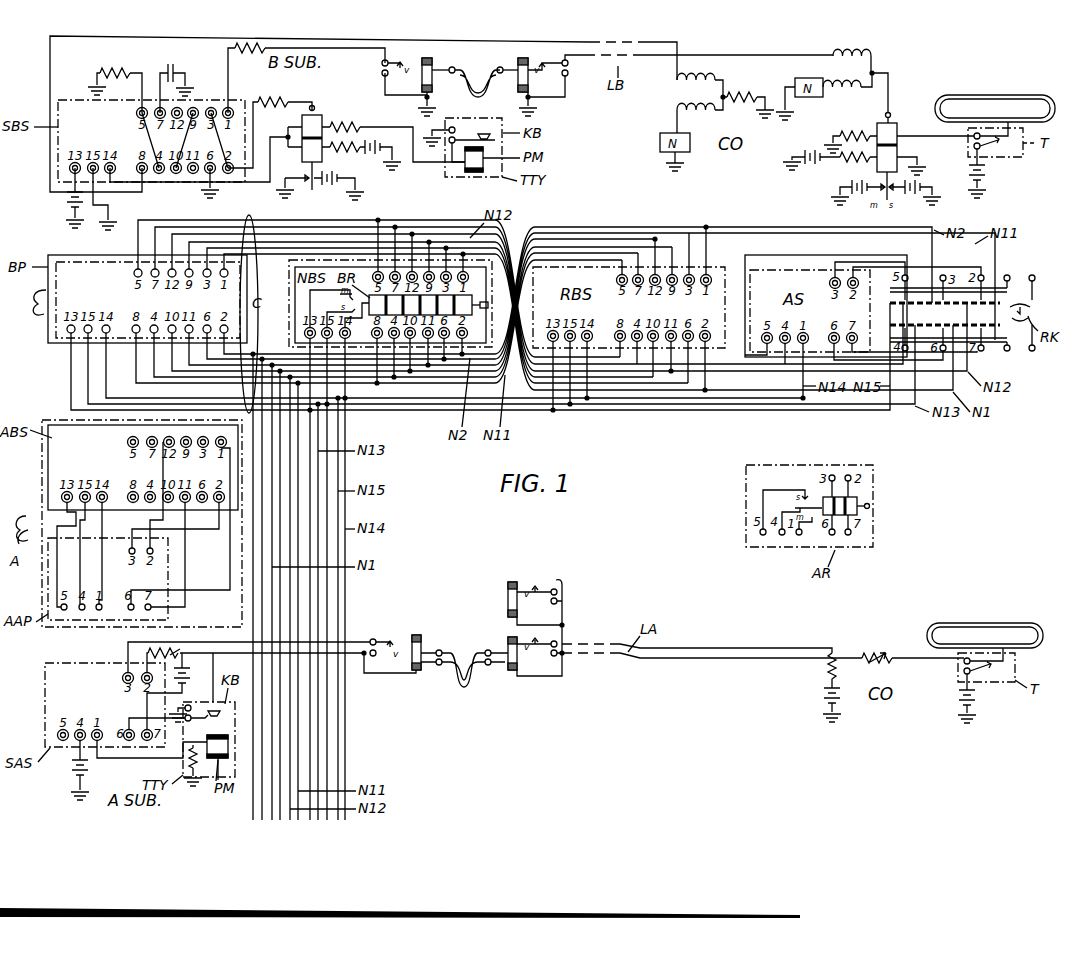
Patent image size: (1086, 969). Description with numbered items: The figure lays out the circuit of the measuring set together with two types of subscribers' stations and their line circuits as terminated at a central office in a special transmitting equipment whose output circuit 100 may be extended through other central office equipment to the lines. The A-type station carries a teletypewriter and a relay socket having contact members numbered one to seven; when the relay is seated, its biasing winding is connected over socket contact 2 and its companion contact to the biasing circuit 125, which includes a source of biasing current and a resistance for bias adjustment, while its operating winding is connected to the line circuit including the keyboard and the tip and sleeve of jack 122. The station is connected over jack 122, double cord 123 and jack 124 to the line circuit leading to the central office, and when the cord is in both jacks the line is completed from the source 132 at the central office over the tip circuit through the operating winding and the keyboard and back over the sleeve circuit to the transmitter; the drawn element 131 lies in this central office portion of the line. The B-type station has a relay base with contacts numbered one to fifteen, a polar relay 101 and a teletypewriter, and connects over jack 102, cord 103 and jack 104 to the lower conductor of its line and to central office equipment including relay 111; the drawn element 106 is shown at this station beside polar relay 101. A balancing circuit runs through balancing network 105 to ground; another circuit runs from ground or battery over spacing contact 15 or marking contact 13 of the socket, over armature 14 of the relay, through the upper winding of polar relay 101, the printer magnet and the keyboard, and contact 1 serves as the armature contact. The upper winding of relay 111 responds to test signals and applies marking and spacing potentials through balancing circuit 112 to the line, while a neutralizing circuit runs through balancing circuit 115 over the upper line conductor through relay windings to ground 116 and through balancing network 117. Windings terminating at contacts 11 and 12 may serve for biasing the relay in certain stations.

The output circuit 100 is at (926, 134).
The polar relay 101 is at (312, 113).
The jack 102 is at (425, 60).
The cord 103 is at (486, 85).
The jack 104 is at (518, 63).
The balancing network 105 is at (202, 196).
The resistor 106 is at (259, 100).
The relay 111 is at (893, 122).
The balancing circuit 112 is at (850, 74).
The balancing circuit 115 is at (677, 93).
The ground 116 is at (101, 69).
The balancing network 117 is at (171, 72).
The jack 122 is at (410, 633).
The double cord 123 is at (465, 666).
The jack 124 is at (498, 630).
The biasing circuit 125 is at (178, 651).
The variable resistor 131 is at (870, 652).
The source 132 is at (826, 692).
The contact member 1 is at (262, 584).
The contact member 2 is at (253, 607).
The contact 11 is at (280, 751).
The contact 12 is at (290, 769).
The marking contact 13 is at (310, 433).
The armature 14 is at (345, 513).
The spacing contact 15 is at (327, 474).